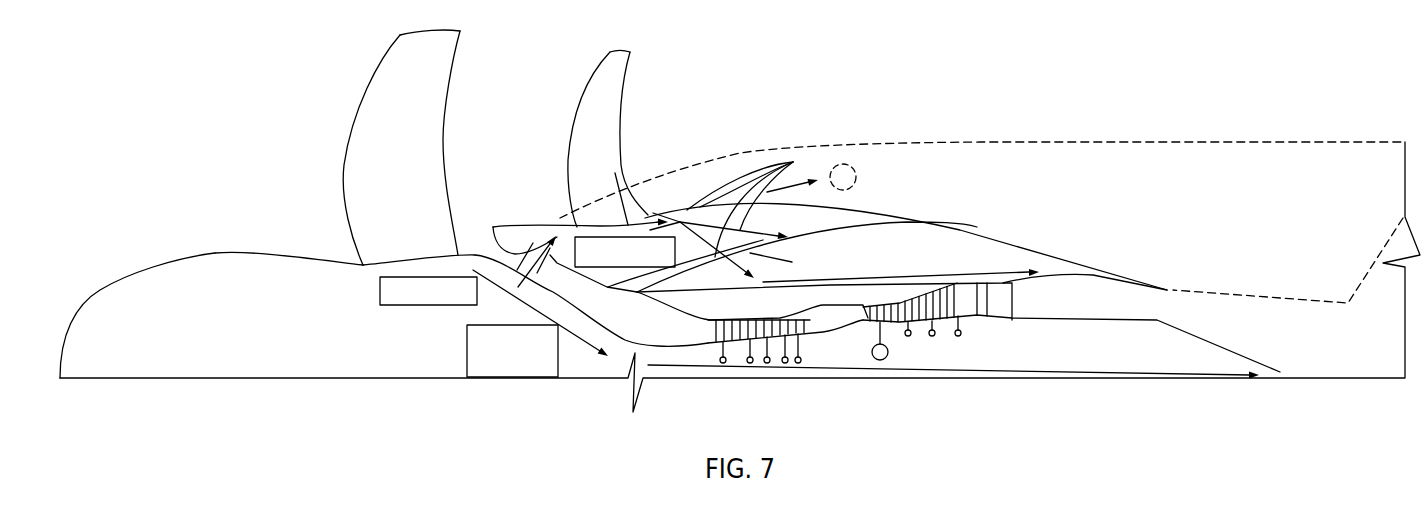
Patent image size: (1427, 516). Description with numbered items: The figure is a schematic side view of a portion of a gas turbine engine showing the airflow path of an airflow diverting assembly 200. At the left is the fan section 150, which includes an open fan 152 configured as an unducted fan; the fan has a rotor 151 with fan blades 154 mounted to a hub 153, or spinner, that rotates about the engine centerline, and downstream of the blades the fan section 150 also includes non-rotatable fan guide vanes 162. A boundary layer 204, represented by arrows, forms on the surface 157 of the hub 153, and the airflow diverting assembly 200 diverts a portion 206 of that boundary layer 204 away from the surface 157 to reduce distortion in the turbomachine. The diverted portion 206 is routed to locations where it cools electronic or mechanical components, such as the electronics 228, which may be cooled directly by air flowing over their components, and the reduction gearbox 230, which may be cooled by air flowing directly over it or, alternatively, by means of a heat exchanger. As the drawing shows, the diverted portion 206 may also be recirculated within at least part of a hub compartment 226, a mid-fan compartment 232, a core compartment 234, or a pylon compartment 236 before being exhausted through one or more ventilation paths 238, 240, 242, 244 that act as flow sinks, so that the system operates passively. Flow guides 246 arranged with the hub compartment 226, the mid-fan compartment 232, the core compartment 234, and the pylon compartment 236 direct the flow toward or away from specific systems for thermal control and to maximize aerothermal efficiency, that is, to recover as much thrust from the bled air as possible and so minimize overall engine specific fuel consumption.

The fan section 150 is at (107, 135).
The rotor 151 is at (125, 275).
The open fan 152 is at (240, 110).
The hub 153 is at (215, 278).
The fan blades 154 is at (363, 80).
The surface 157 is at (292, 262).
The fan guide vanes 162 is at (623, 107).
The airflow diverting assembly 200 is at (473, 245).
The boundary layer 204 is at (953, 277).
The portion of the boundary layer 206 is at (538, 237).
The hub compartment 226 is at (373, 327).
The electronics 228 is at (430, 305).
The reduction gearbox 230 is at (497, 378).
The mid-fan compartment 232 is at (708, 203).
The core compartment 234 is at (1003, 263).
The pylon compartment 236 is at (1205, 185).
The ventilation path 238 is at (672, 198).
The ventilation path 240 is at (1288, 375).
The ventilation path 242 is at (1075, 258).
The ventilation path 244 is at (858, 175).
The flow guides 246 is at (493, 228).